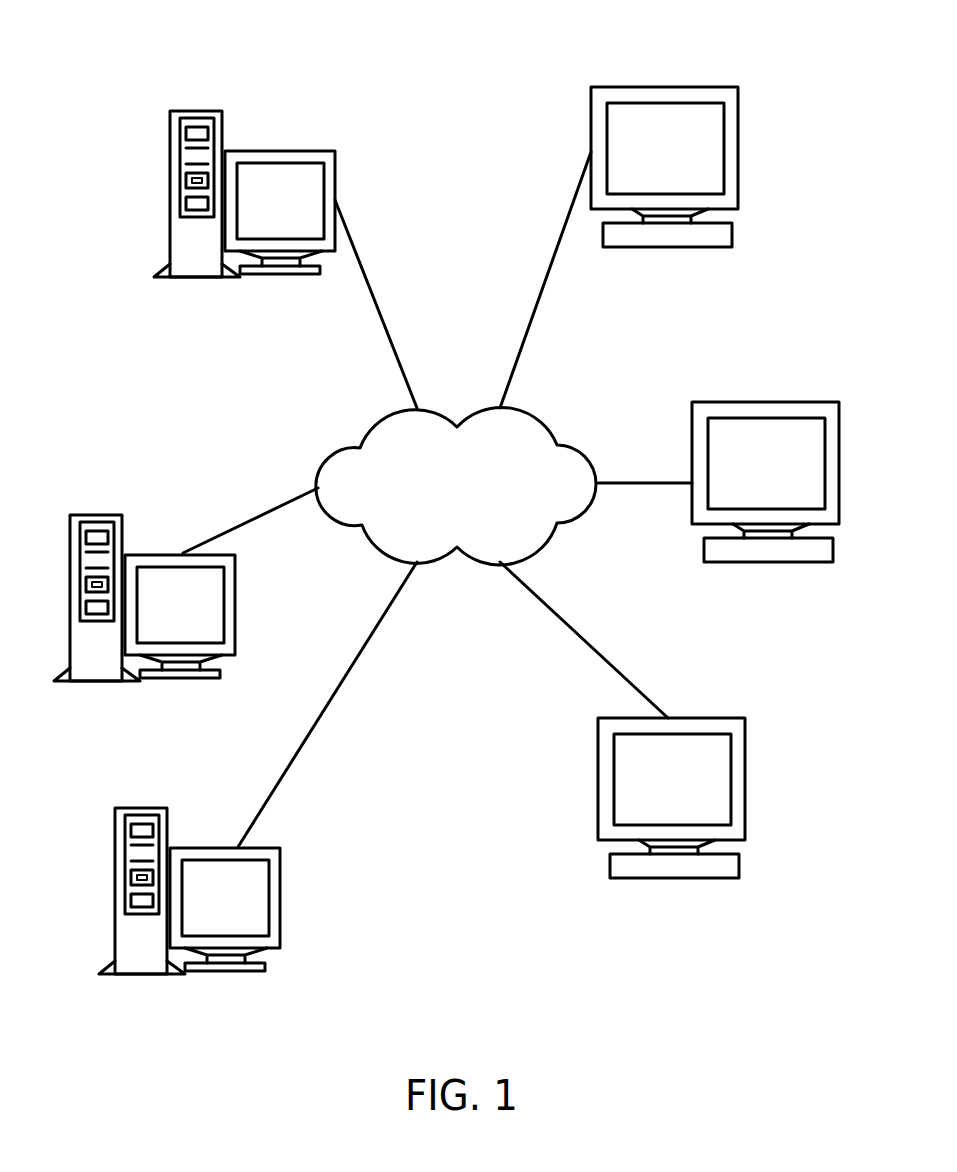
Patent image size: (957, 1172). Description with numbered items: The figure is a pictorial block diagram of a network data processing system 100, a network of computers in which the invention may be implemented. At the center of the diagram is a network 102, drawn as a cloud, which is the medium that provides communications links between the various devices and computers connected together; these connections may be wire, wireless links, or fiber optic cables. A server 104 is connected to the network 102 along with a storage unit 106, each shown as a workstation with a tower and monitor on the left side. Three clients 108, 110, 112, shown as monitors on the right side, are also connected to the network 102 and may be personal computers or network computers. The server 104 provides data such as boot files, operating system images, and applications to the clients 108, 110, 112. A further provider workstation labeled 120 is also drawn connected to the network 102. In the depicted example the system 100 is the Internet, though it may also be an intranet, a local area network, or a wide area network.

The network data processing system 100 is at (443, 798).
The network 102 is at (439, 526).
The server 104 is at (152, 562).
The storage unit 106 is at (273, 895).
The client 108 is at (640, 95).
The client 110 is at (740, 410).
The client 112 is at (722, 868).
The priced object provider 120 is at (308, 162).